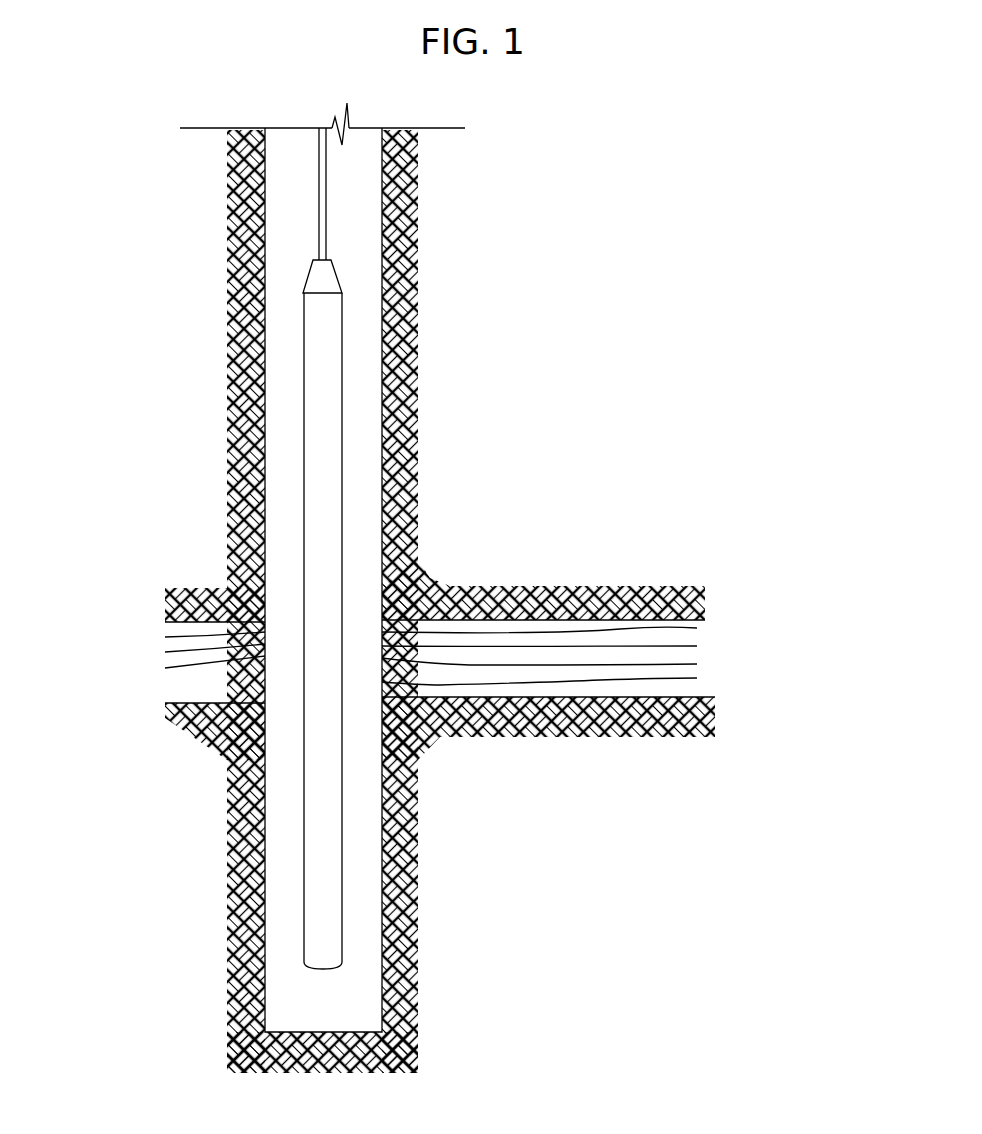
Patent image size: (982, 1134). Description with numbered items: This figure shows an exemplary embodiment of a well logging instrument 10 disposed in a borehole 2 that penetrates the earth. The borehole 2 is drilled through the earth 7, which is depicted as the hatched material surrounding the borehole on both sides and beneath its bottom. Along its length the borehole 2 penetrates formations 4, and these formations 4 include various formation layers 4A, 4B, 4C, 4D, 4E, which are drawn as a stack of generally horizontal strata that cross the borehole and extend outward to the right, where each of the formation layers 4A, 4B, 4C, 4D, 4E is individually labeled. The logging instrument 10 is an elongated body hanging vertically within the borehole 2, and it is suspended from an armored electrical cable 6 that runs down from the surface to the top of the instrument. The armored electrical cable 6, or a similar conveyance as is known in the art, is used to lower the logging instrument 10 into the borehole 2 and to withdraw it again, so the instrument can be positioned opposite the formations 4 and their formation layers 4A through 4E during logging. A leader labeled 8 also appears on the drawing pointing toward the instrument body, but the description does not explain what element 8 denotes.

The borehole 2 is at (367, 190).
The formations 4 is at (157, 654).
The formation layer 4A is at (707, 620).
The formation layer 4B is at (703, 637).
The formation layer 4C is at (703, 652).
The formation layer 4D is at (703, 672).
The formation layer 4E is at (710, 690).
The armored electrical cable 6 is at (326, 196).
The earth 7 is at (412, 895).
The downhole tool 8 is at (305, 582).
The well logging instrument 10 is at (357, 349).